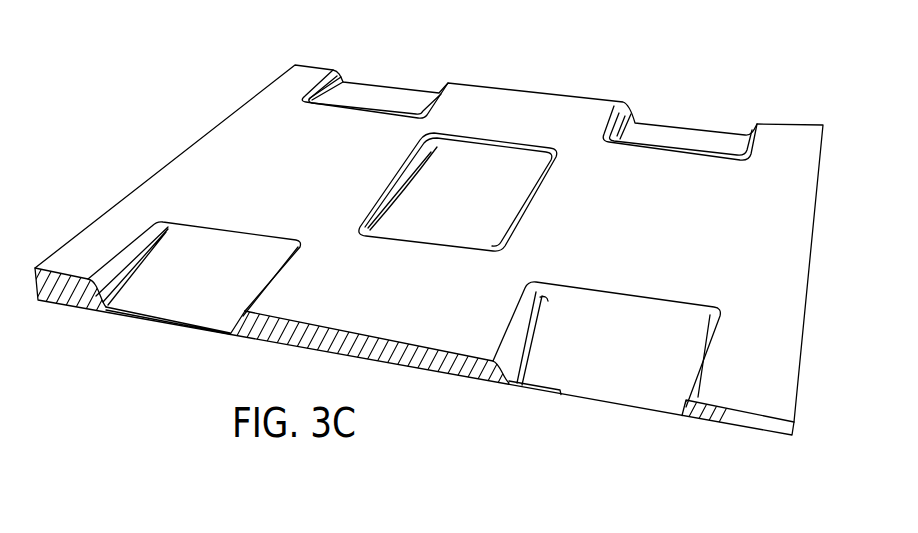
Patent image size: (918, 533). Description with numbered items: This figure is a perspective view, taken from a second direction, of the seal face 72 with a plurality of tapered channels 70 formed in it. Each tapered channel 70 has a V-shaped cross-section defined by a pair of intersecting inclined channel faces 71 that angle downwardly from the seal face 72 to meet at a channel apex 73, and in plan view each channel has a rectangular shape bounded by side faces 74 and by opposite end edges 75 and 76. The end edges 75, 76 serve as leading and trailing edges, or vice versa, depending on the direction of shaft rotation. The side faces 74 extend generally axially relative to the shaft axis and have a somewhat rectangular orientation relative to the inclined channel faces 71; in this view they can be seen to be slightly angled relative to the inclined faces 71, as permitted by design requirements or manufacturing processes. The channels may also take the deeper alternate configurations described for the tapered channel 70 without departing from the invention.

The tapered channel 70 is at (414, 70).
The inclined channel faces 71 is at (650, 123).
The seal face 72 is at (215, 152).
The channel apex 73 is at (648, 402).
The side faces 74 is at (633, 112).
The end edge 75 is at (689, 302).
The end edge 76 is at (667, 152).